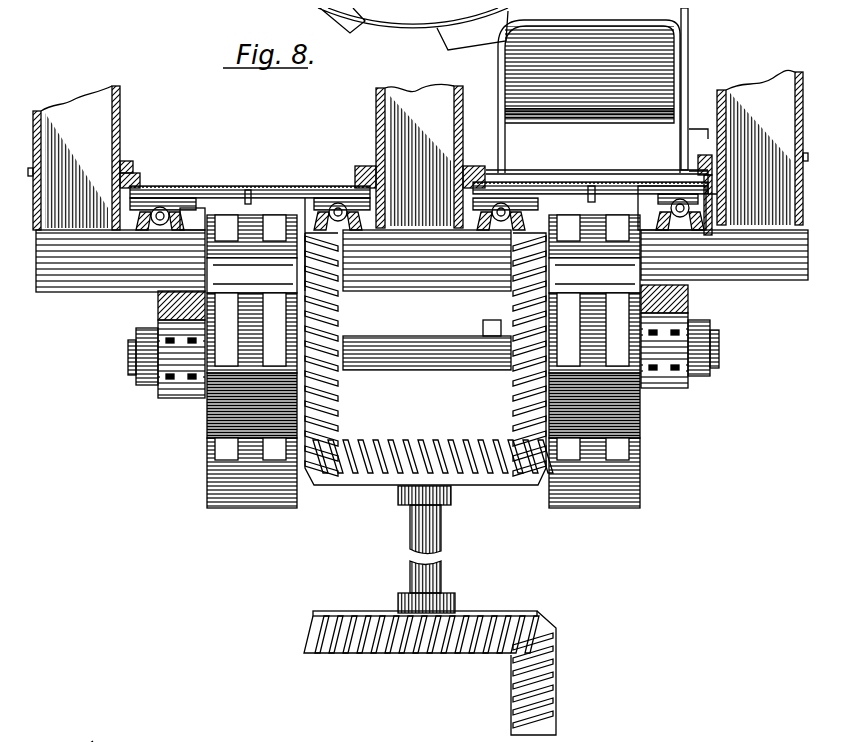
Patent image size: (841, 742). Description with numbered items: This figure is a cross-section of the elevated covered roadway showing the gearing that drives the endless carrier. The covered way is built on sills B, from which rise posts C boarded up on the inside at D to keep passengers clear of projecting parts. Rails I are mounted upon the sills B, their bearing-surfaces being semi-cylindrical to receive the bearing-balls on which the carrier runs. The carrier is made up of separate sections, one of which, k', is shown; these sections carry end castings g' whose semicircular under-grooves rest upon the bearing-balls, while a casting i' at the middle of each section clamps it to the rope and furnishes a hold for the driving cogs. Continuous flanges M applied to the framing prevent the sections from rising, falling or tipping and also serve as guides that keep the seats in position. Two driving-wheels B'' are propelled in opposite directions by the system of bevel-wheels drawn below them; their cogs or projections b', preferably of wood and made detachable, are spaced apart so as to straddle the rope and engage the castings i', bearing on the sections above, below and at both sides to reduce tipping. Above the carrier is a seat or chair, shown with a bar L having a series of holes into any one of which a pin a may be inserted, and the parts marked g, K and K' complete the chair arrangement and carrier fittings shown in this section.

The posts C is at (418, 149).
The boarding D is at (367, 103).
The continuous flanges M is at (416, 187).
The casting i' is at (419, 228).
The carrier sections k' is at (418, 196).
The end castings g' is at (412, 215).
The rails I is at (662, 211).
The tab K' is at (420, 202).
The sills B is at (422, 261).
The driving-wheels B'' is at (423, 361).
The cogs b' is at (422, 329).
The bar L is at (695, 89).
The pin a is at (698, 121).
The hook g is at (703, 167).
The box K is at (597, 97).